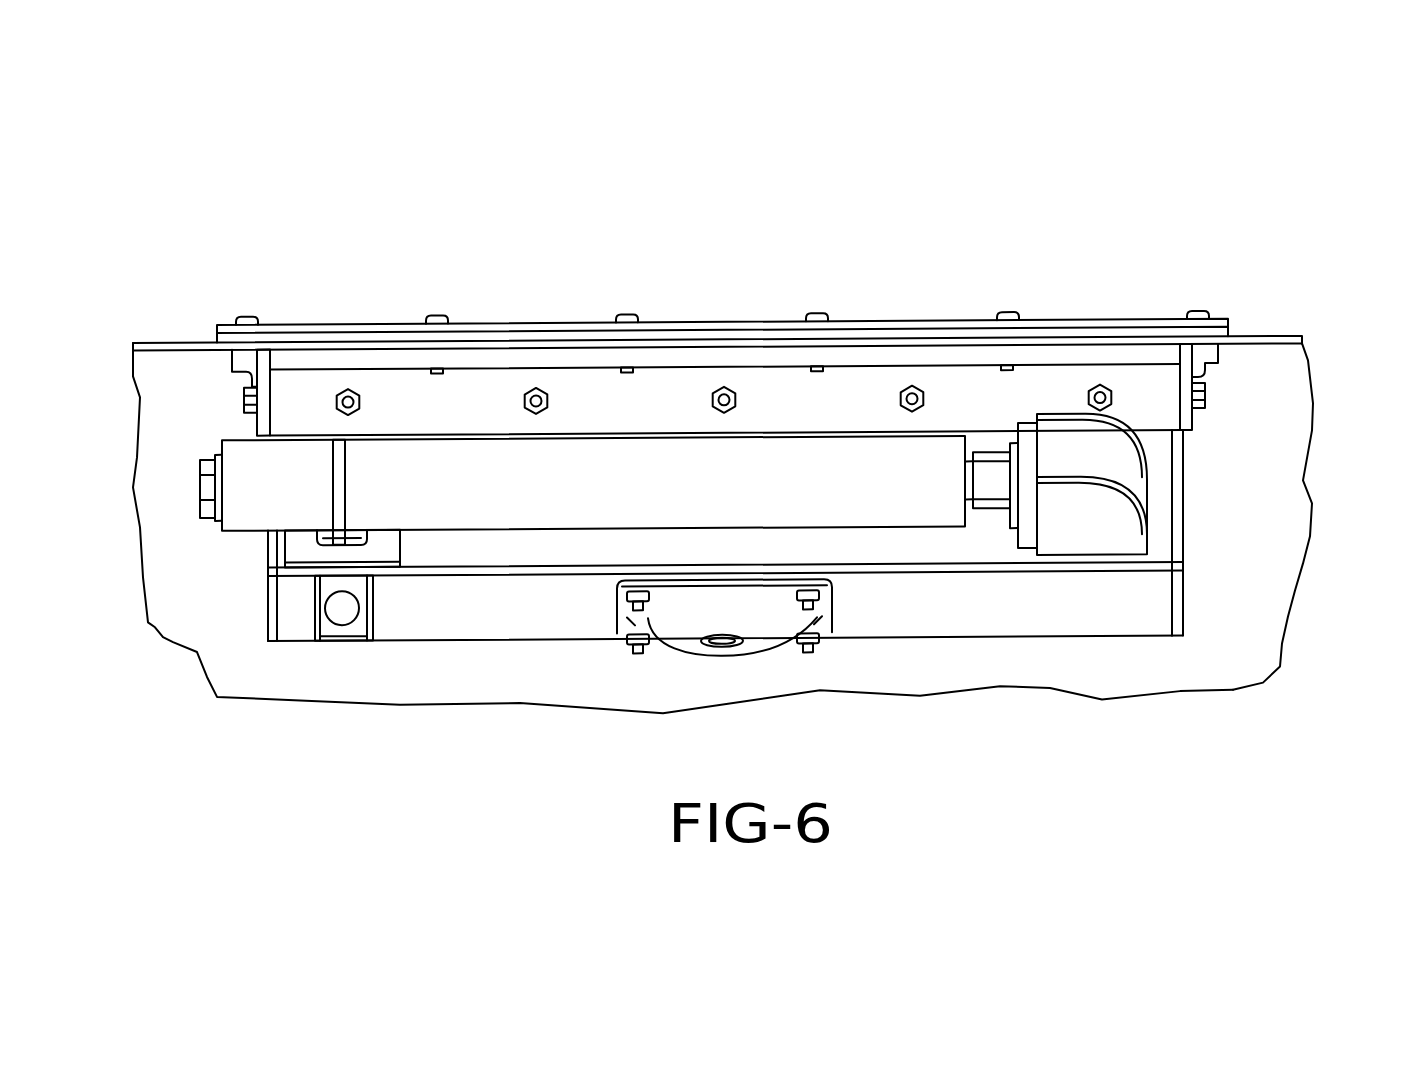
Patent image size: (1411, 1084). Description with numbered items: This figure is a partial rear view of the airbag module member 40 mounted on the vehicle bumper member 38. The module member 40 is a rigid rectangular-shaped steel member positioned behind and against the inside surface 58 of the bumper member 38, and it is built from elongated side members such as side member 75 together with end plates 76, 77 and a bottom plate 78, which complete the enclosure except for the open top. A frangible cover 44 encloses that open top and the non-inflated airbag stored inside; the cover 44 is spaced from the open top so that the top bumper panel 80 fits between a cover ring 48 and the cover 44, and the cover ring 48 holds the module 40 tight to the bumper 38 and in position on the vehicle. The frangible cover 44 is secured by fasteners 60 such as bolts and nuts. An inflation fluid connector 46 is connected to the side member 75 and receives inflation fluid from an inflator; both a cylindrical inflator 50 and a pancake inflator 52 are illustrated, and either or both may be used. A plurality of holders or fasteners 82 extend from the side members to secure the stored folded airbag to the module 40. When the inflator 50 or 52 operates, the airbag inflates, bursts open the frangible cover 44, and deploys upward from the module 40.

The bumper member 38 is at (150, 473).
The module member 40 is at (1013, 636).
The frangible cover 44 is at (1230, 328).
The inflation fluid connector 46 is at (1117, 470).
The cover ring 48 is at (1088, 320).
The cylindrical inflator 50 is at (242, 533).
The pancake inflator 52 is at (758, 625).
The inside surface of the bumper 58 is at (1278, 385).
The fasteners 60 is at (805, 315).
The elongated side member 75 is at (942, 548).
The end plate 76 is at (1183, 540).
The end plate 77 is at (267, 608).
The bottom plate 78 is at (1127, 618).
The top bumper panel 80 is at (1300, 335).
The holders or fasteners 82 is at (356, 388).